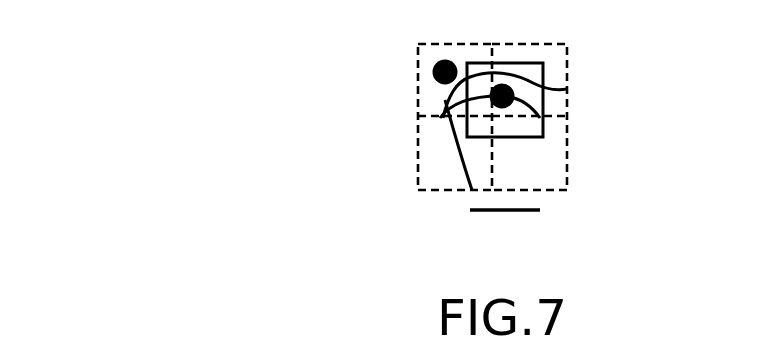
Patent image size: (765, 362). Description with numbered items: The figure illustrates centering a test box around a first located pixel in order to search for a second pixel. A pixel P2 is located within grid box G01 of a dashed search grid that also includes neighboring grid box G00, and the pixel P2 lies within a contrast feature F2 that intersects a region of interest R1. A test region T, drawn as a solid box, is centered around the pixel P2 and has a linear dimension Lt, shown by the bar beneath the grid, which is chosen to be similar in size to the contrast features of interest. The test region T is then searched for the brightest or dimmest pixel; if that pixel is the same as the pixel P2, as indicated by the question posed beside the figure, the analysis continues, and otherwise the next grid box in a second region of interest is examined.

The grid box G00 is at (455, 95).
The grid box G01 is at (529, 95).
The test region T is at (545, 64).
The region of interest R1 is at (567, 89).
The contrast feature F2 is at (543, 130).
The pixel P2 is at (453, 107).
The linear dimension Lt is at (505, 240).